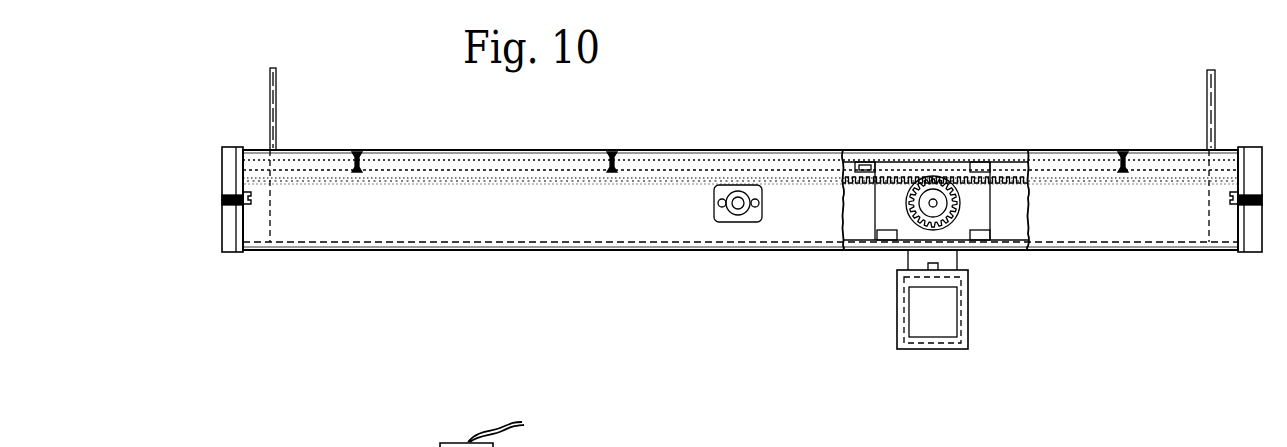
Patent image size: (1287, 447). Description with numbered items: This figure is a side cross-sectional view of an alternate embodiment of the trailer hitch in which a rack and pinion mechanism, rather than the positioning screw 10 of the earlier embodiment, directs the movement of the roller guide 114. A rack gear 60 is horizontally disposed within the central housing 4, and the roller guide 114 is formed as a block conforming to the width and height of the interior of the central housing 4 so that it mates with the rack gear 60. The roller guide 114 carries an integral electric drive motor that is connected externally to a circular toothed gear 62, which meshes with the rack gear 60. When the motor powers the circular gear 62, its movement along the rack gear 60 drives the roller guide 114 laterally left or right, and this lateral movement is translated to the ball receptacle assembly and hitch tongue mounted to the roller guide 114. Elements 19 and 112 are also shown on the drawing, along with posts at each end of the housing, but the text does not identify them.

The central housing 4 is at (433, 251).
The positioning screw 10 is at (276, 80).
The end post 19 is at (1205, 82).
The rack gear 60 is at (652, 160).
The circular toothed gear 62 is at (906, 190).
The motor bracket 112 is at (948, 350).
The roller guide 114 is at (958, 165).